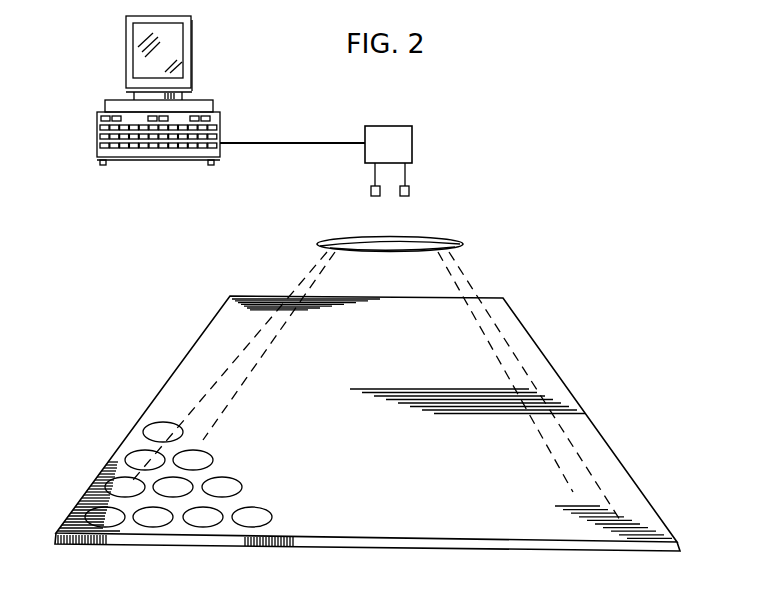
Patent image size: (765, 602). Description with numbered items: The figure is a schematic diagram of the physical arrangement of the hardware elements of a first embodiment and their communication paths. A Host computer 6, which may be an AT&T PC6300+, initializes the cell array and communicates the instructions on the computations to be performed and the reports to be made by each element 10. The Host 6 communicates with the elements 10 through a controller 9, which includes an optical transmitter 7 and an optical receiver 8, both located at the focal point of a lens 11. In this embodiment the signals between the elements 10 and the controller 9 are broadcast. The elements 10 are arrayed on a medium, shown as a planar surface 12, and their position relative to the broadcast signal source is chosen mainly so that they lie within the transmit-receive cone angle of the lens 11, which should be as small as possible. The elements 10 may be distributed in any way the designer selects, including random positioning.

The Host computer 6 is at (97, 128).
The optical transmitter 7 is at (371, 191).
The optical receiver 8 is at (410, 191).
The controller 9 is at (400, 142).
The element 10 is at (128, 372).
The lens 11 is at (447, 240).
The planar surface 12 is at (552, 370).